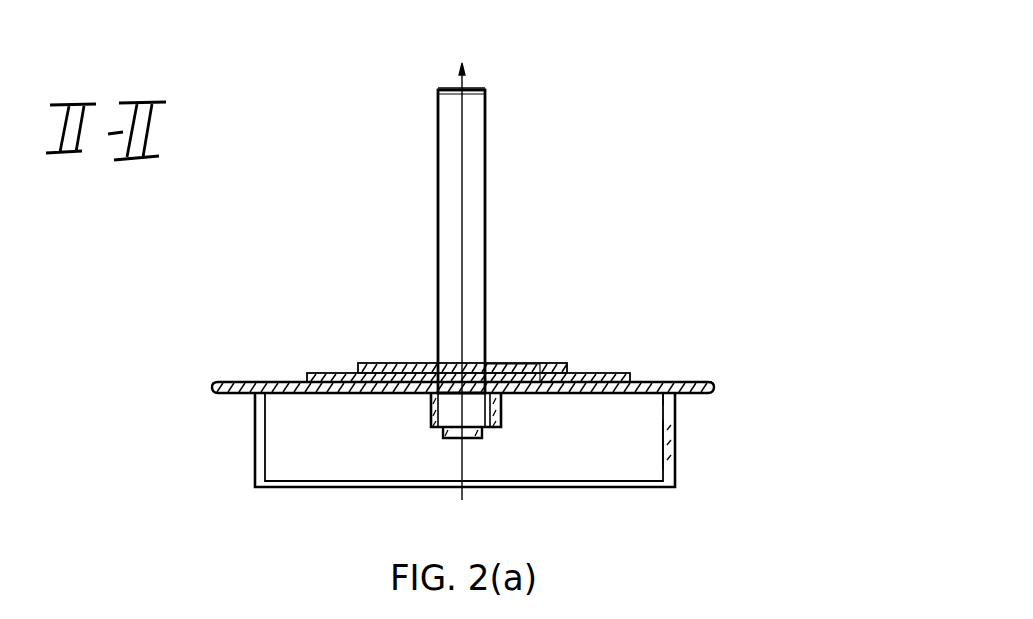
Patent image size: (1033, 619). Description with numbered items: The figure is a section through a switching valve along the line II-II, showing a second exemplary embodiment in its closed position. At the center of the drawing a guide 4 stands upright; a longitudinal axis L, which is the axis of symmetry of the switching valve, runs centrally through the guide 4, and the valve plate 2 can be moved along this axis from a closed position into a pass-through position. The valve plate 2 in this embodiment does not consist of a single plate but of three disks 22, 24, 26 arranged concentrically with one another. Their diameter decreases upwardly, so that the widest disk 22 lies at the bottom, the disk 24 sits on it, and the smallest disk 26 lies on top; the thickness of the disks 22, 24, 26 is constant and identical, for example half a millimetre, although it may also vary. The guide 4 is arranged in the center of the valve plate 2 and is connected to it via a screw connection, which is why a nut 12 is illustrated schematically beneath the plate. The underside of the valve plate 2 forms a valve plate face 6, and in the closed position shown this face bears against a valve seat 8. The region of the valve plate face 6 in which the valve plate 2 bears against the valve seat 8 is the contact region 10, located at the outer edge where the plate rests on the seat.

The valve plate 2 is at (450, 353).
The guide 4 is at (477, 200).
The valve plate face 6 is at (340, 393).
The valve seat 8 is at (675, 460).
The contact region 10 is at (675, 395).
The nut 12 is at (540, 365).
The disk 22 is at (217, 383).
The disk 24 is at (327, 375).
The disk 26 is at (392, 365).
The longitudinal axis L is at (462, 110).